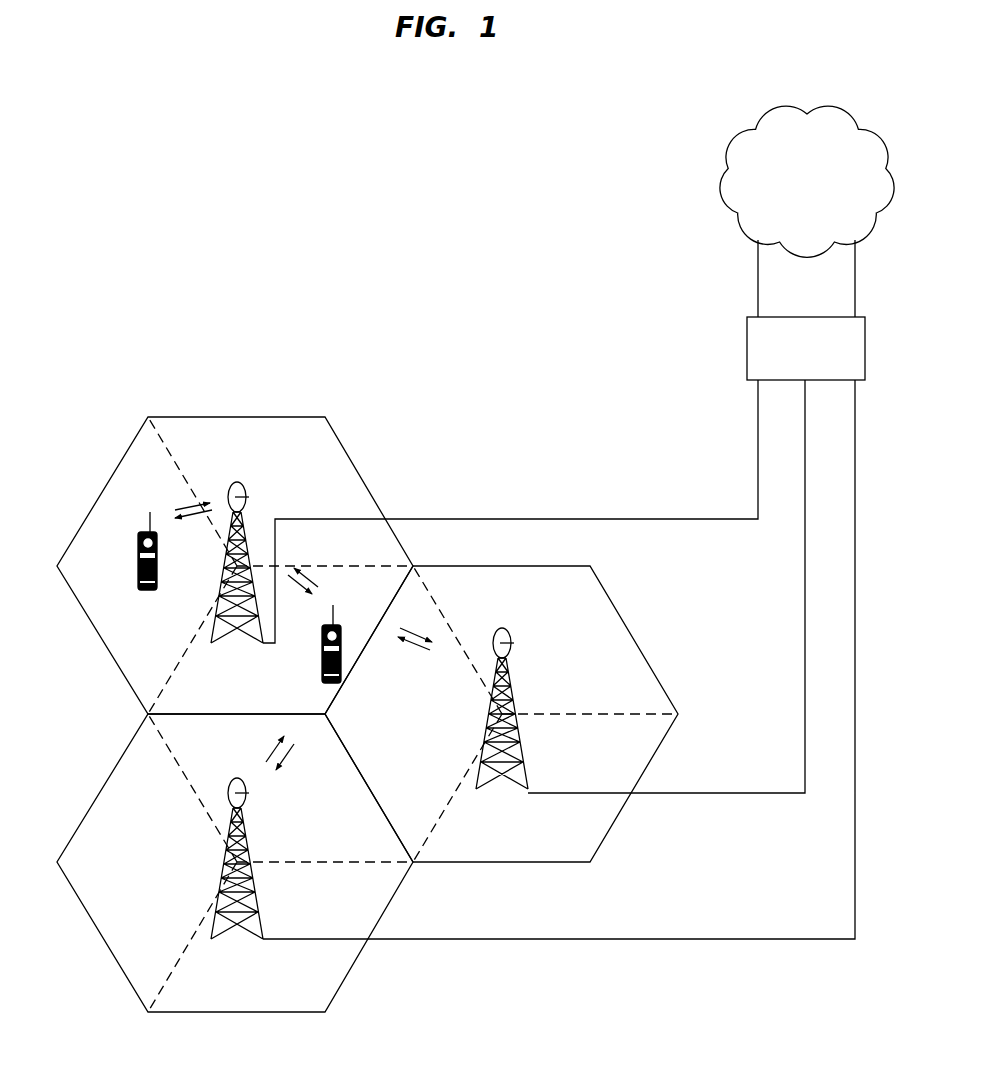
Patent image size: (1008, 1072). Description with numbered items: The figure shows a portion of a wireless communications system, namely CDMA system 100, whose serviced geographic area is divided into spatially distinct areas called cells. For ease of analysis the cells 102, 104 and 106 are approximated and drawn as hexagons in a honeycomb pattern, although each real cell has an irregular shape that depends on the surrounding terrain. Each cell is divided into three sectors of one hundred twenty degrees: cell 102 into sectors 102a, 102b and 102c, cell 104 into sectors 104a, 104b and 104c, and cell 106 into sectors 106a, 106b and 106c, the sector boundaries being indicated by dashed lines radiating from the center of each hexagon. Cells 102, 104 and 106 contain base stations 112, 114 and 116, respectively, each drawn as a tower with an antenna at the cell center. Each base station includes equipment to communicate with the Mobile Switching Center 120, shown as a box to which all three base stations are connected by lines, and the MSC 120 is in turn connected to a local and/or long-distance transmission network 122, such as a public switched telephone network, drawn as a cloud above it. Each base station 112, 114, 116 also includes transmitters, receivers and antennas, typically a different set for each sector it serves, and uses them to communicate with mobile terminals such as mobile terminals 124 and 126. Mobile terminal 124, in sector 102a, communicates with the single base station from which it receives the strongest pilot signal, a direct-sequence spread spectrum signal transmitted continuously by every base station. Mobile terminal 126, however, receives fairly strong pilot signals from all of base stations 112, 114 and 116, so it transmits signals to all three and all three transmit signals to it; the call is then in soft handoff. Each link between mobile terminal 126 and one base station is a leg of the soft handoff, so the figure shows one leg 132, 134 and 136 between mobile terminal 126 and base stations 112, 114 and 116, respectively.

The CDMA system 100 is at (427, 302).
The cell 102 is at (246, 417).
The sector 102a is at (116, 581).
The sector 102b is at (256, 449).
The sector 102c is at (254, 706).
The cell 104 is at (519, 566).
The sector 104a is at (381, 726).
The sector 104b is at (521, 596).
The sector 104c is at (520, 856).
The cell 106 is at (229, 1012).
The sector 106a is at (116, 875).
The sector 106b is at (256, 746).
The sector 106c is at (255, 1004).
The base station 112 is at (249, 645).
The base station 114 is at (516, 793).
The base station 116 is at (249, 939).
The Mobile Switching Center 120 is at (746, 380).
The transmission network 122 is at (738, 232).
The mobile terminal 124 is at (141, 592).
The mobile terminal 126 is at (315, 665).
The leg 132 is at (306, 565).
The leg 134 is at (409, 650).
The leg 136 is at (283, 768).